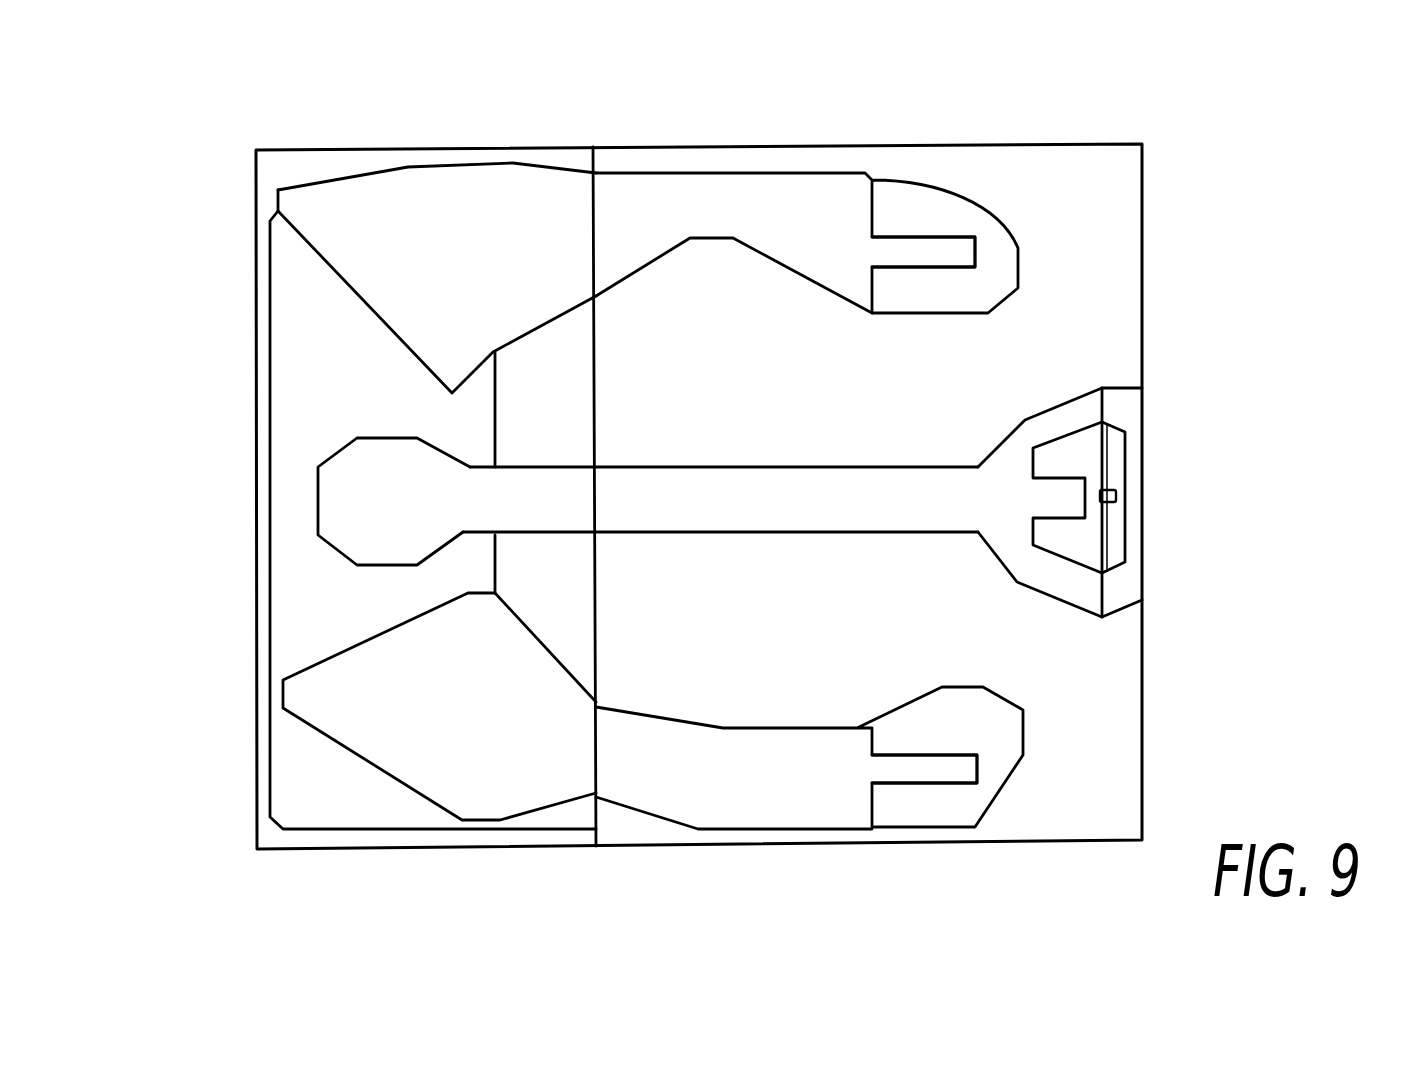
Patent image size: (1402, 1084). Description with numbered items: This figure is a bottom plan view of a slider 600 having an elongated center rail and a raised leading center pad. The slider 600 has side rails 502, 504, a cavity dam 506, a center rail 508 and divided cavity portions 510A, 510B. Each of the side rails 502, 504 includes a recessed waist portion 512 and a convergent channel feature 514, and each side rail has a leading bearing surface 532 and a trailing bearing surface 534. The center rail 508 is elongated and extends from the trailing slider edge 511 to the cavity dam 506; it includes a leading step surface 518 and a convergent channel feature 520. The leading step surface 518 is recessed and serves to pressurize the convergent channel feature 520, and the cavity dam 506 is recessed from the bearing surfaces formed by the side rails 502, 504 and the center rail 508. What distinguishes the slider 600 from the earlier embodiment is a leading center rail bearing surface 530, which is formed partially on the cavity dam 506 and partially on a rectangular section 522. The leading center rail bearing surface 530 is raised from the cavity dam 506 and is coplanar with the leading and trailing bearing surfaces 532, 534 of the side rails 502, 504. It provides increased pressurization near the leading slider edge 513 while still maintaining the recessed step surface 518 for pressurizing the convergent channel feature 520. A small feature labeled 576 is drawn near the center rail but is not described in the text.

The slider 600 is at (215, 197).
The side rail 502 is at (478, 196).
The side rail 504 is at (443, 765).
The cavity dam 506 is at (312, 597).
The center rail 508 is at (1073, 393).
The divided cavity portion 510A is at (737, 351).
The divided cavity portion 510B is at (770, 610).
The trailing slider edge 511 is at (1143, 682).
The recessed waist portion 512 is at (703, 182).
The leading slider edge 513 is at (257, 735).
The convergent channel feature 514 is at (873, 255).
The leading step surface 518 is at (1012, 548).
The convergent channel feature 520 is at (1047, 498).
The rectangular section 522 is at (828, 465).
The leading center rail bearing surface 530 is at (355, 462).
The leading bearing surface 532 is at (420, 188).
The trailing bearing surface 534 is at (952, 202).
The small tab 576 is at (1085, 450).